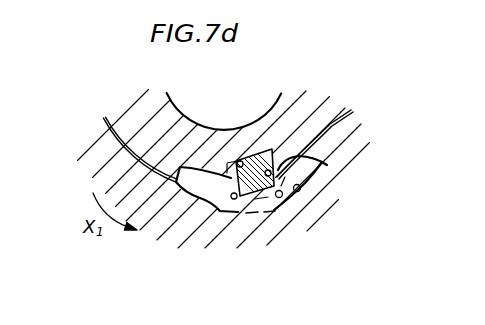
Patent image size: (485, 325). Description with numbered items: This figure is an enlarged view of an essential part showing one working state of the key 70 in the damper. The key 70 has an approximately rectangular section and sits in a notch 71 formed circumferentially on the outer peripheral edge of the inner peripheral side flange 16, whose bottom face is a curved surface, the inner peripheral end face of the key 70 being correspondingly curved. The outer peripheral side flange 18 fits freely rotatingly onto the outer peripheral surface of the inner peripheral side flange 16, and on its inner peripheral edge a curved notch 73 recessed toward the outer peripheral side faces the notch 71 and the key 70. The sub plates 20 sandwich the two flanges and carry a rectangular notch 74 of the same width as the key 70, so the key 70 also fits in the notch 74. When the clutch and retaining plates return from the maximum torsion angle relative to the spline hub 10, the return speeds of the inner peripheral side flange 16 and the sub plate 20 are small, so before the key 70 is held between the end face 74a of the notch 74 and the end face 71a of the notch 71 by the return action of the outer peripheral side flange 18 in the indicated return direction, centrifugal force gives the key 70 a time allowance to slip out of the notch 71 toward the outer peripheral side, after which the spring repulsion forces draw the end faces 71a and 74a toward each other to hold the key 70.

The spline hub 10 is at (190, 119).
The inner peripheral side flange 16 is at (314, 122).
The outer peripheral side flange 18 is at (104, 150).
The sub plate 20 is at (179, 200).
The key 70 is at (253, 198).
The notch 71 is at (327, 165).
The end face 71a is at (242, 162).
The notch 73 is at (278, 192).
The notch 74 is at (279, 197).
The end face 74a is at (233, 200).